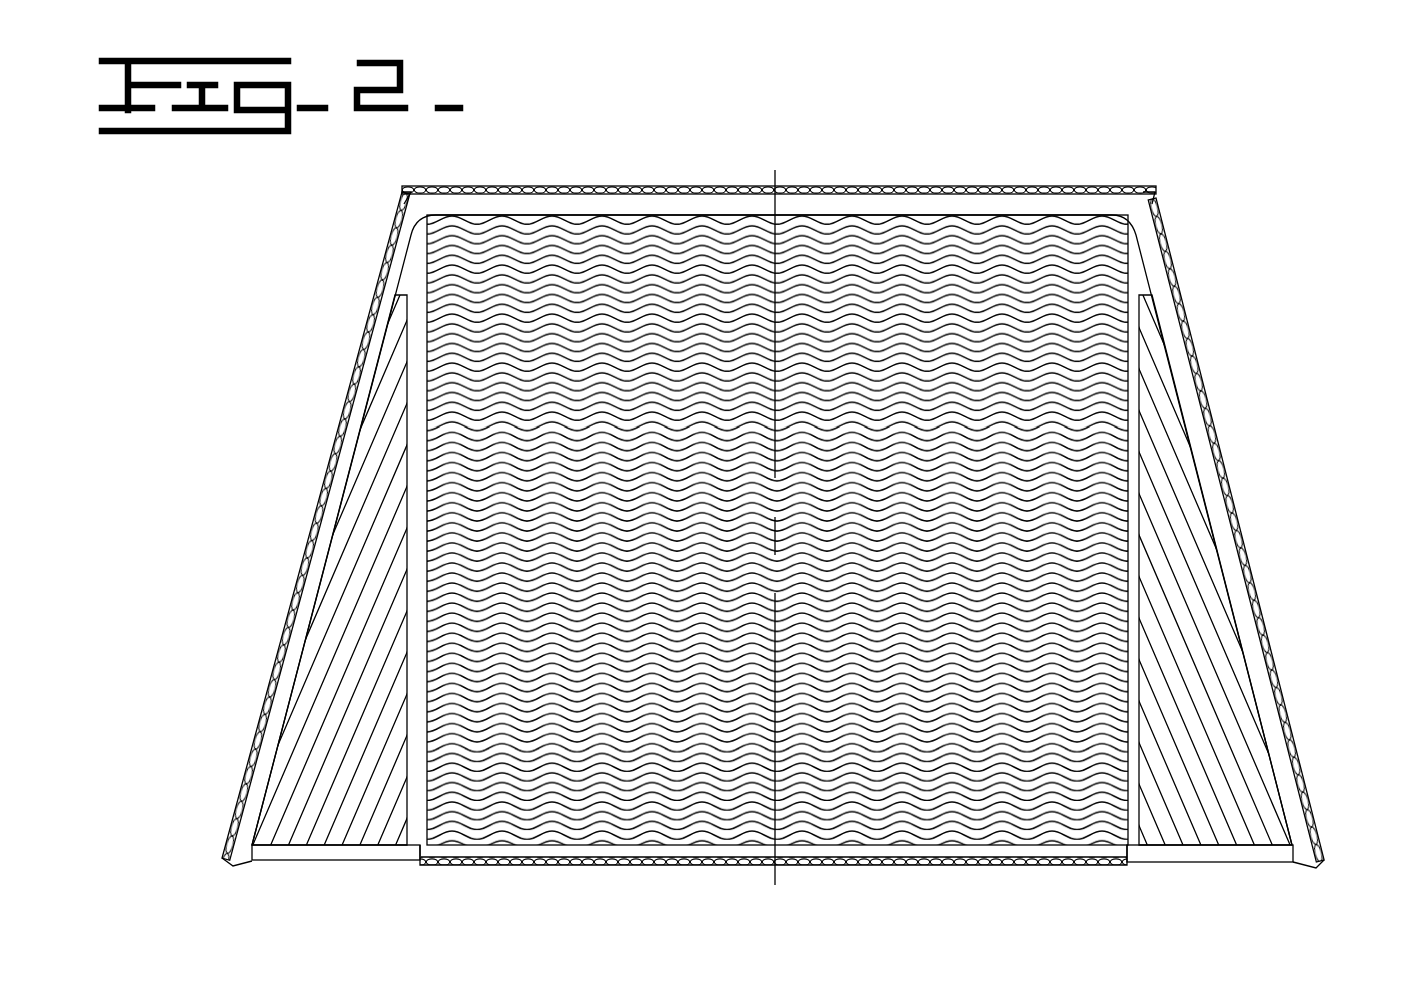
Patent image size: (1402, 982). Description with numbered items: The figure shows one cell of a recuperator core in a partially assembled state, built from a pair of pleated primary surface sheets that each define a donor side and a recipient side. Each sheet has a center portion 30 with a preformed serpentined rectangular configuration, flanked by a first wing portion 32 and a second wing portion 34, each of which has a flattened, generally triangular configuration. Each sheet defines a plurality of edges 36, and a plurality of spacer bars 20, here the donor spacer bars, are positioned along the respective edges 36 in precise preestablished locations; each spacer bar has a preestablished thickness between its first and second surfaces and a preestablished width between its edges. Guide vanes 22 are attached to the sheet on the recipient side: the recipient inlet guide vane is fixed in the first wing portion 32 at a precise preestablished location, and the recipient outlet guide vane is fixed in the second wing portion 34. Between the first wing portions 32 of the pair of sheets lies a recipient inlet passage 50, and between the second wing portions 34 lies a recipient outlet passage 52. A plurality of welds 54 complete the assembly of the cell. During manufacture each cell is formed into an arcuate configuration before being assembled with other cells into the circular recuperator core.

The spacer bars 20 is at (383, 320).
The guide vanes 22 is at (379, 622).
The center portion 30 is at (912, 409).
The first wing portion 32 is at (295, 644).
The second wing portion 34 is at (1260, 669).
The edges 36 is at (1100, 188).
The recipient inlet passage 50 is at (358, 862).
The recipient outlet passage 52 is at (1236, 865).
The welds 54 is at (1020, 188).